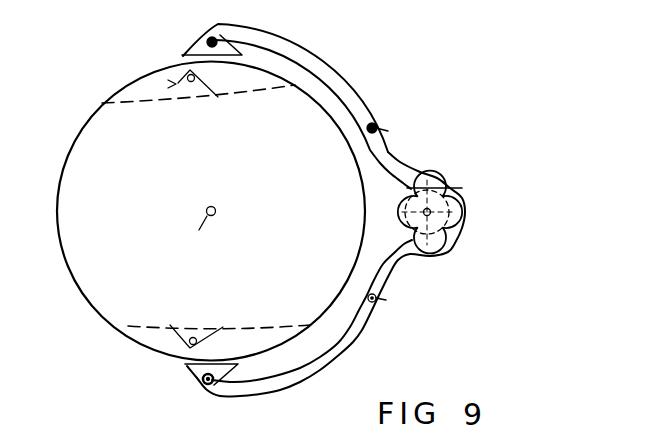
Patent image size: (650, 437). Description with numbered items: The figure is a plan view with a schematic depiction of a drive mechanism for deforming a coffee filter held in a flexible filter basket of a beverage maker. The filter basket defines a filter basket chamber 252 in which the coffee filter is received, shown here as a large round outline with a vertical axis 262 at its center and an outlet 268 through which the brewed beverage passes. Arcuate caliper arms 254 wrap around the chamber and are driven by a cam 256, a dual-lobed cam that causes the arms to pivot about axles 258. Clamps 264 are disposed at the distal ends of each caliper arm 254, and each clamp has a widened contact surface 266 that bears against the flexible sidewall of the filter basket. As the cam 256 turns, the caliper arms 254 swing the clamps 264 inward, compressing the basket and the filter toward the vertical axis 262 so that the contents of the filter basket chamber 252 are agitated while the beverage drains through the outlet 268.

The filter basket chamber 252 is at (207, 175).
The caliper arms 254 is at (338, 70).
The cam 256 is at (440, 207).
The axles 258 is at (375, 127).
The vertical axis 262 is at (218, 212).
The clamps 264 is at (203, 387).
The widened contact surface 266 is at (187, 364).
The outlet 268 is at (185, 253).